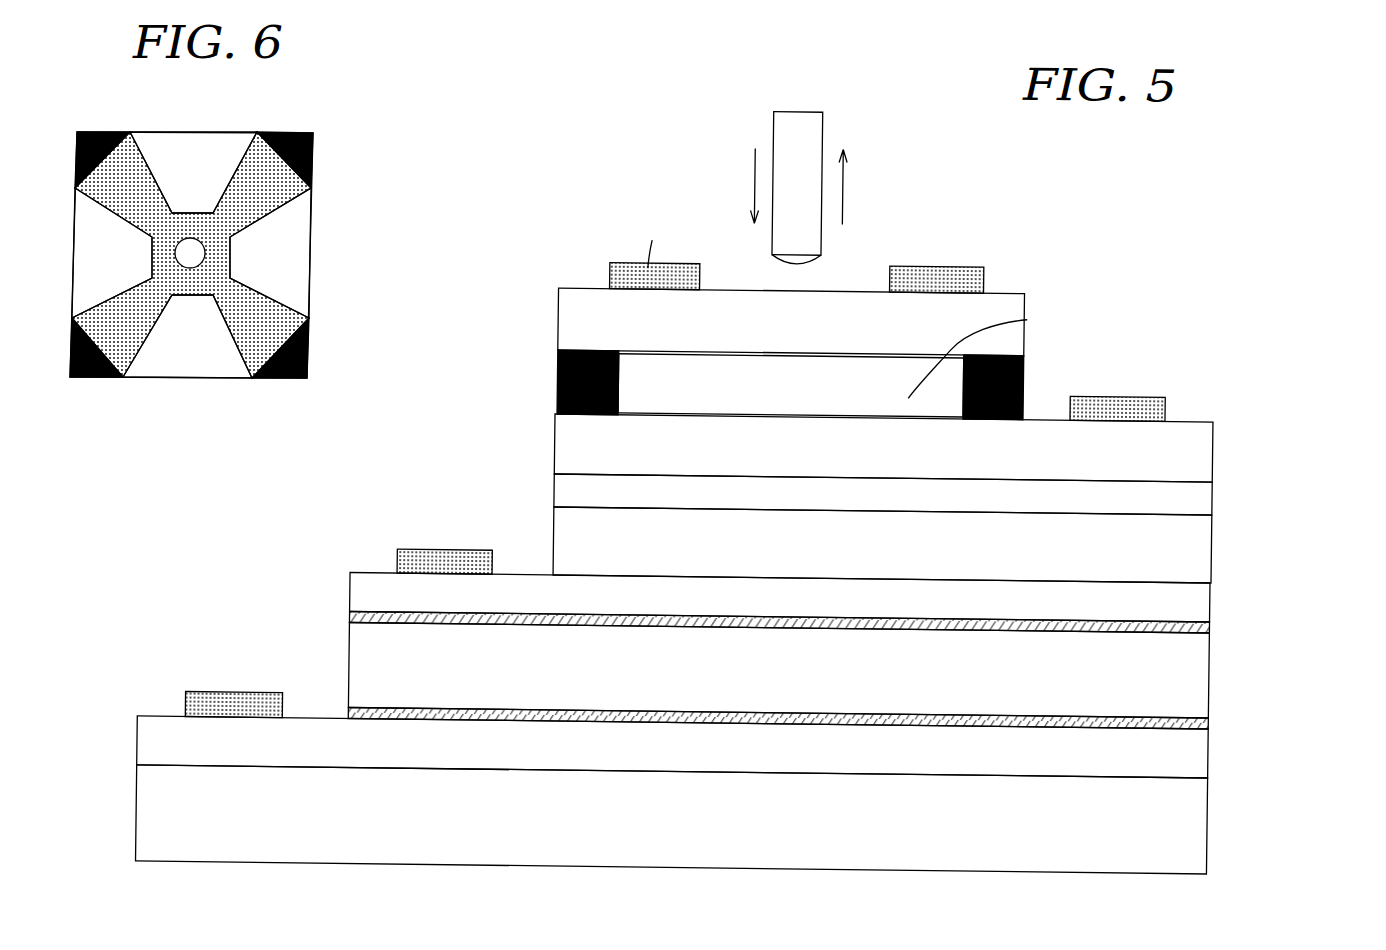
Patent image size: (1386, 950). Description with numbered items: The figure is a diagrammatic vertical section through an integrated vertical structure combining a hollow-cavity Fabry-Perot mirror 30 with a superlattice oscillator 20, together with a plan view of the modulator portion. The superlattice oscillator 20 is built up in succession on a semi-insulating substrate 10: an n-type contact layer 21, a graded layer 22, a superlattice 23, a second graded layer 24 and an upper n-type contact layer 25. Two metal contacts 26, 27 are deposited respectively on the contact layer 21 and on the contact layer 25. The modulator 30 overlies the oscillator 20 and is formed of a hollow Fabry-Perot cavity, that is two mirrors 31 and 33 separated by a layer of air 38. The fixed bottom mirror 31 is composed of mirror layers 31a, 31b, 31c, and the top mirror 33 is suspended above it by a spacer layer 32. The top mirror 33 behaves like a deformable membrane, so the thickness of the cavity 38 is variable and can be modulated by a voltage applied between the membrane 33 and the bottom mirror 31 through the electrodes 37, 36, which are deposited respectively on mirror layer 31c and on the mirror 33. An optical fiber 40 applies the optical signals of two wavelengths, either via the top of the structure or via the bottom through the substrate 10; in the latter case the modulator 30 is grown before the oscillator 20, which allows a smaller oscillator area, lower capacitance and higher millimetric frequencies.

In FIG. 5, the semi-insulating substrate 10 is at (1197, 830).
In FIG. 5, the superlattice oscillator 20 is at (751, 676).
In FIG. 5, the n-type contact layer 21 is at (1202, 744).
In FIG. 5, the graded layer 22 is at (1201, 715).
In FIG. 5, the superlattice 23 is at (1200, 674).
In FIG. 5, the graded layer 24 is at (1201, 620).
In FIG. 5, the n-type contact layer 25 is at (817, 594).
In FIG. 5, the metal contact 26 is at (236, 707).
In FIG. 5, the metal contact 27 is at (411, 556).
In FIG. 5, the hollow-cavity Fabry-Perot mirror 30 is at (898, 395).
In FIG. 6, the bottom mirror 31 is at (188, 363).
In FIG. 5, the bottom mirror 31 is at (861, 497).
In FIG. 5, the mirror layer 31a is at (1180, 532).
In FIG. 5, the mirror layer 31b is at (1180, 490).
In FIG. 5, the mirror layer 31c is at (1180, 436).
In FIG. 6, the spacer layer 32 is at (313, 153).
In FIG. 5, the spacer layer 32 is at (557, 374).
In FIG. 6, the top mirror 33 is at (191, 250).
In FIG. 5, the top mirror 33 is at (578, 312).
In FIG. 6, the electrode 36 is at (267, 313).
In FIG. 5, the electrode 36 is at (932, 263).
In FIG. 5, the electrode 37 is at (1117, 391).
In FIG. 5, the layer of air 38 is at (1026, 314).
In FIG. 5, the fiber 40 is at (793, 115).